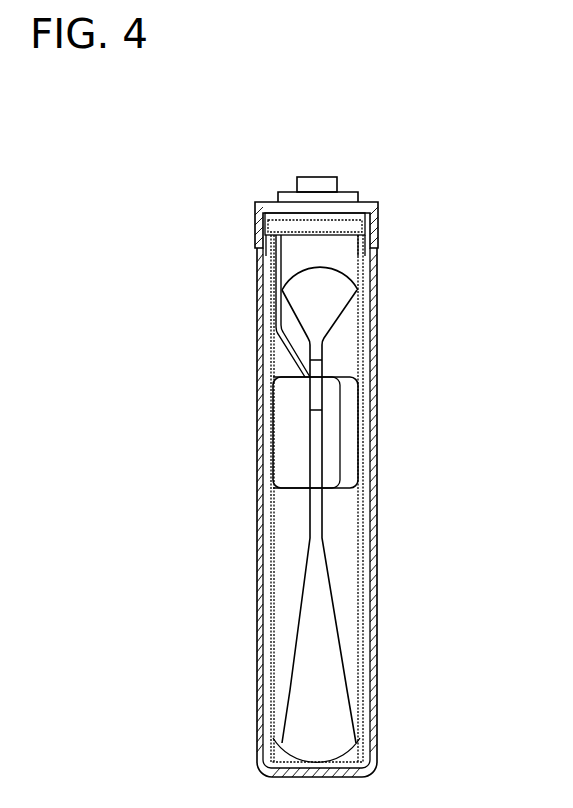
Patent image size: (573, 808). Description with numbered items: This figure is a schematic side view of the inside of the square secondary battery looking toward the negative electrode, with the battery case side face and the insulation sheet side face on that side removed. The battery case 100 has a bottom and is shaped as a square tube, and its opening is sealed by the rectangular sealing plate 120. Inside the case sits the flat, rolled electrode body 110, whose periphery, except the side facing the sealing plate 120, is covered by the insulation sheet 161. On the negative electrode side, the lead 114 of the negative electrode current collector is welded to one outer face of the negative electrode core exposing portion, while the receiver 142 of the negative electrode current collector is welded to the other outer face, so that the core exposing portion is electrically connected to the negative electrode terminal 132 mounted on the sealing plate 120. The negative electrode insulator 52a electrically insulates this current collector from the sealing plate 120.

The battery case 100 is at (377, 698).
The electrode body 110 is at (342, 522).
The lead of the negative electrode current collector 114 is at (277, 339).
The sealing plate 120 is at (367, 207).
The negative electrode terminal 132 is at (317, 183).
The receiver of the negative electrode current collector 142 is at (340, 433).
The insulation sheet 161 is at (367, 273).
The negative electrode insulator 52a is at (355, 223).